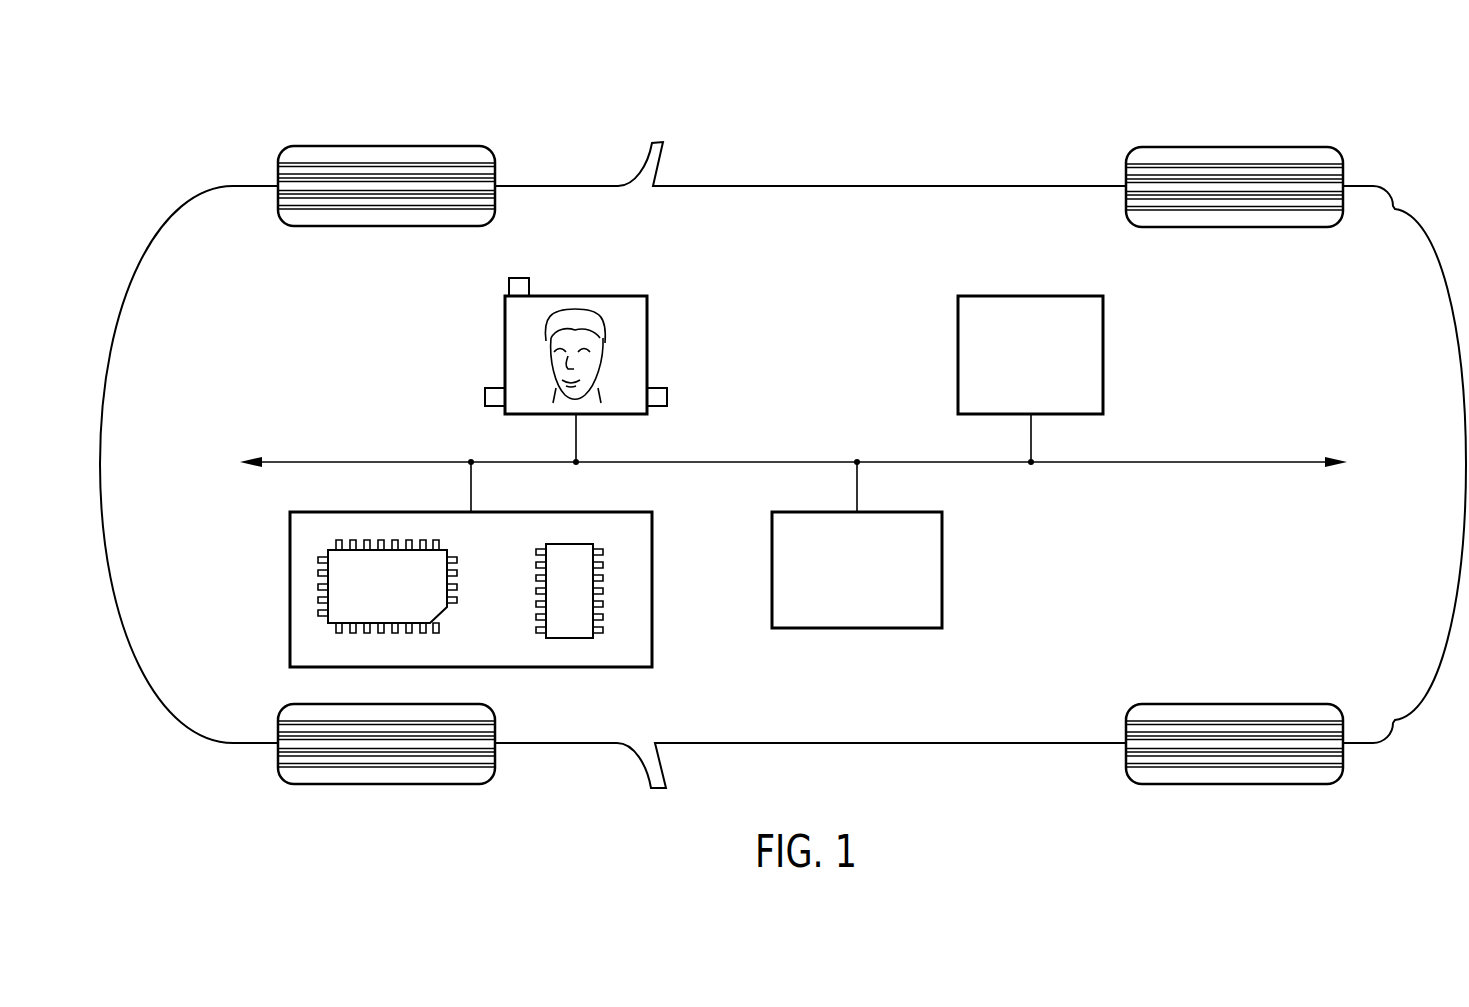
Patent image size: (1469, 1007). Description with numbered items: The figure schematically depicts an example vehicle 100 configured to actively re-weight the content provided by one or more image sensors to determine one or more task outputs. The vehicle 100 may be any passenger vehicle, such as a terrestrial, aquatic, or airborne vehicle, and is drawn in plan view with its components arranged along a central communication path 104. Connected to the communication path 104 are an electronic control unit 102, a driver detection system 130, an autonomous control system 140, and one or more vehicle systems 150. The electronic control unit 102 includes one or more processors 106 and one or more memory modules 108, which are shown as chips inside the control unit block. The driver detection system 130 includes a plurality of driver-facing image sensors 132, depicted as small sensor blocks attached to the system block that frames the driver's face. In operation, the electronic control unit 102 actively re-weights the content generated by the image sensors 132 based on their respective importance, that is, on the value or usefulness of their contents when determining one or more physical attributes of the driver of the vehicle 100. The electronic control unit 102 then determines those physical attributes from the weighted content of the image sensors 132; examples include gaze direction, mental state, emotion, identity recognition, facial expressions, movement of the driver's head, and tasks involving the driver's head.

The vehicle 100 is at (1256, 122).
The electronic control unit 102 is at (652, 589).
The communication path 104 is at (283, 458).
The processor 106 is at (440, 618).
The memory module 108 is at (538, 546).
The driver detection system 130 is at (628, 296).
The driver-facing image sensor 132 is at (519, 278).
The autonomous control system 140 is at (1103, 361).
The vehicle systems 150 is at (942, 569).